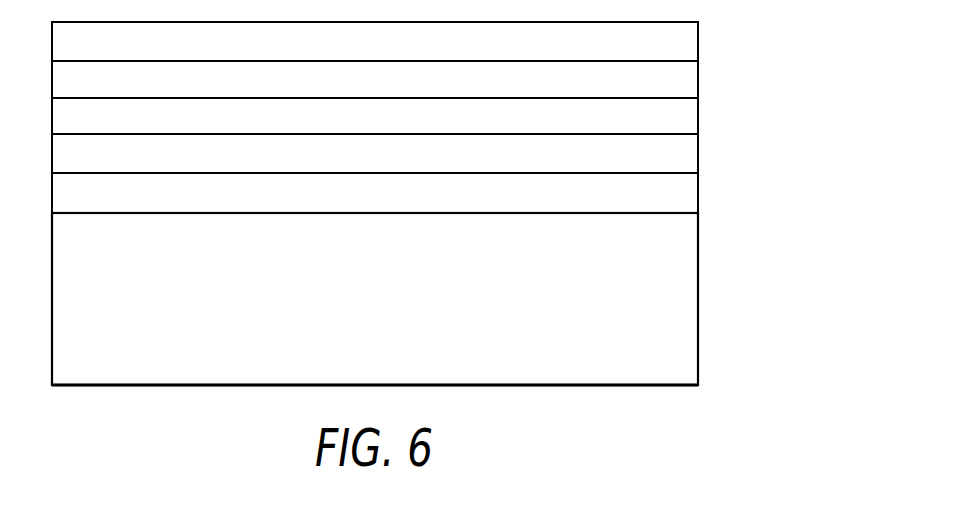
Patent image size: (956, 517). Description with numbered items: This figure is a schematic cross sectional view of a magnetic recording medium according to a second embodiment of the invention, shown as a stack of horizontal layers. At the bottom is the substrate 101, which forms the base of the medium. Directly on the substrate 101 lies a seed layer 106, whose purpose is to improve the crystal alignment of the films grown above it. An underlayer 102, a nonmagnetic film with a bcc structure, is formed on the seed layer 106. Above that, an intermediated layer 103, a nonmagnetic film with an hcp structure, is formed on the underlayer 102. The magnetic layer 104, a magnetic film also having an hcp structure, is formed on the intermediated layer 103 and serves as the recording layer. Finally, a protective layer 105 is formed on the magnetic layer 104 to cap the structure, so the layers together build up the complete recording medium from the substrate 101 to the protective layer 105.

The substrate 101 is at (688, 278).
The seed layer 106 is at (690, 194).
The underlayer 102 is at (690, 155).
The intermediated layer 103 is at (690, 118).
The magnetic layer 104 is at (690, 79).
The protective layer 105 is at (690, 43).